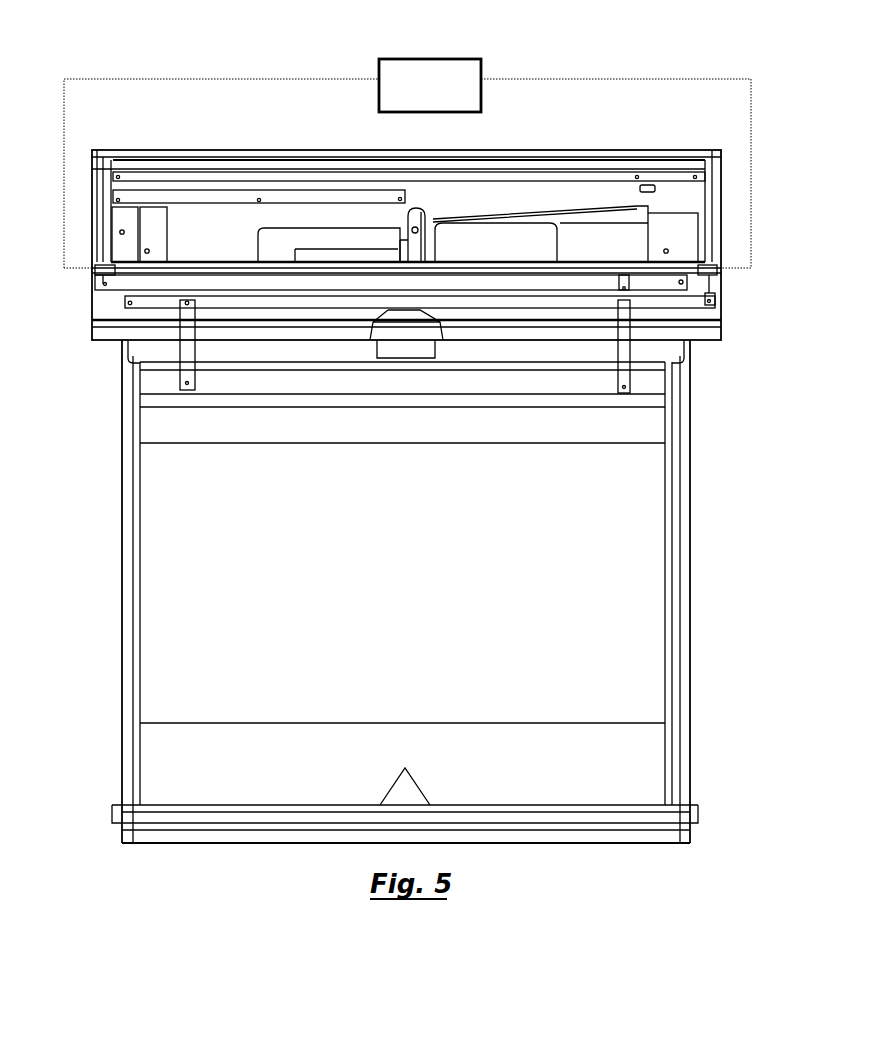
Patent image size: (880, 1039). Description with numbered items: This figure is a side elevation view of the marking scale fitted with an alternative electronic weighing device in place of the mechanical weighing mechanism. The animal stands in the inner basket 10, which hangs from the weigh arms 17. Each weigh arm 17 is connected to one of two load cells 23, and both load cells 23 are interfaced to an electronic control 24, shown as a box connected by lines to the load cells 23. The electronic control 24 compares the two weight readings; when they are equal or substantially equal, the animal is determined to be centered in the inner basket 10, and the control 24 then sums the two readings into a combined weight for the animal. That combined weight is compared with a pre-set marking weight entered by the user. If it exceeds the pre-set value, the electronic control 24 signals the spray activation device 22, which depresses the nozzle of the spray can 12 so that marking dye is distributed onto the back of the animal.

The inner basket 10 is at (622, 575).
The spray can 12 is at (345, 235).
The weigh arms 17 is at (112, 290).
The spray activation device 22 is at (423, 212).
The load cells 23 is at (98, 277).
The electronic control 24 is at (463, 80).